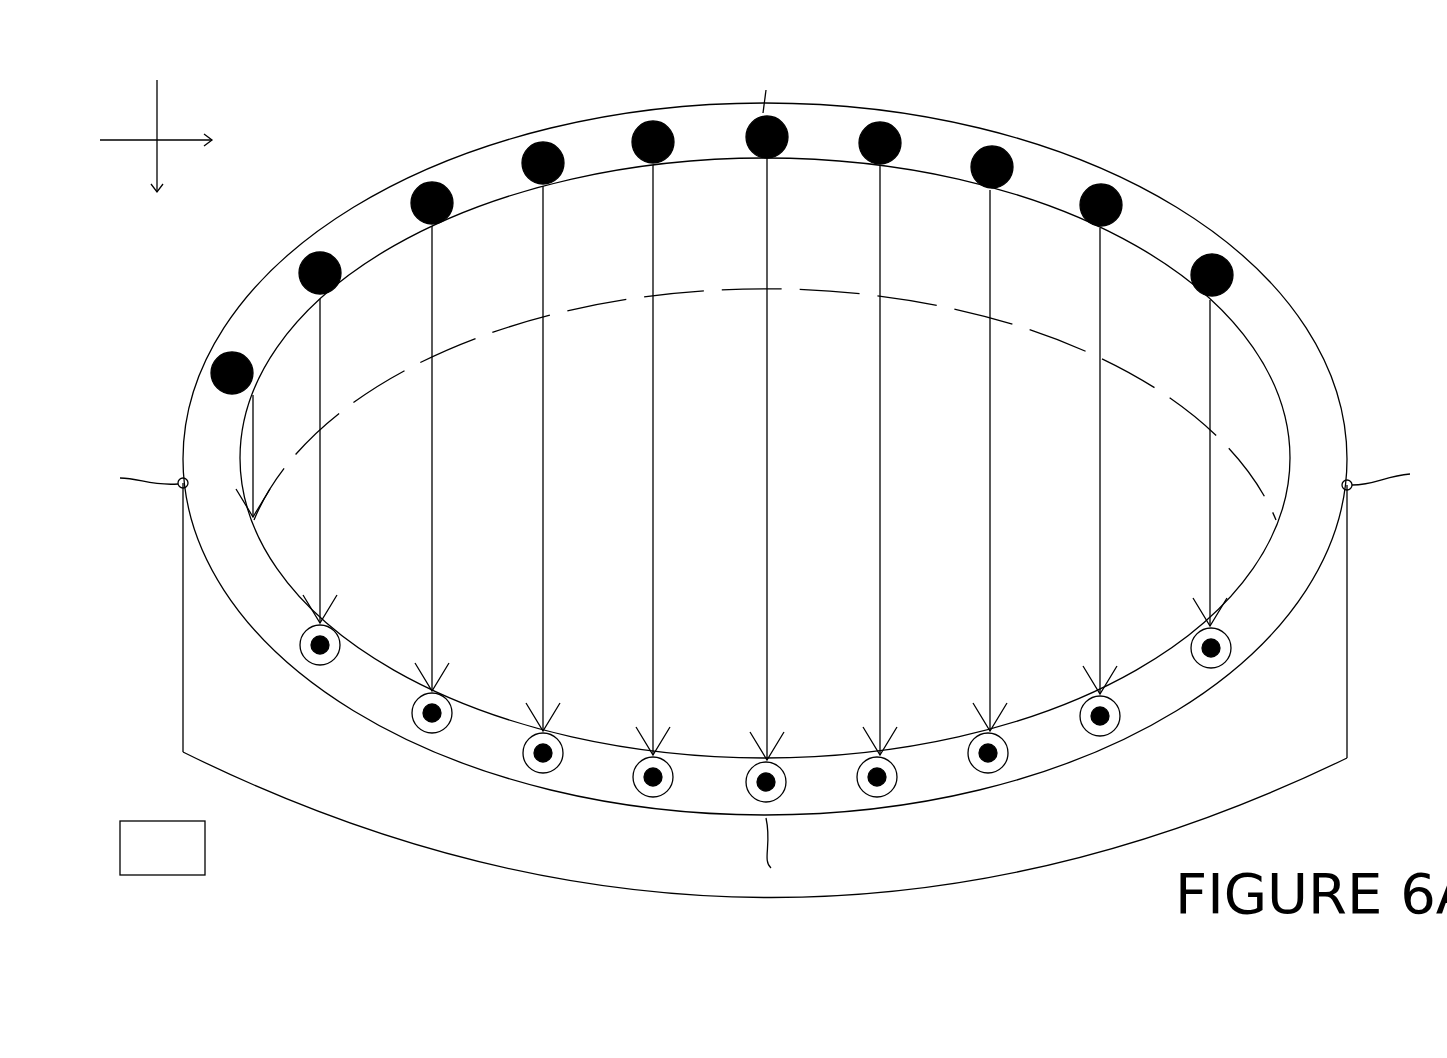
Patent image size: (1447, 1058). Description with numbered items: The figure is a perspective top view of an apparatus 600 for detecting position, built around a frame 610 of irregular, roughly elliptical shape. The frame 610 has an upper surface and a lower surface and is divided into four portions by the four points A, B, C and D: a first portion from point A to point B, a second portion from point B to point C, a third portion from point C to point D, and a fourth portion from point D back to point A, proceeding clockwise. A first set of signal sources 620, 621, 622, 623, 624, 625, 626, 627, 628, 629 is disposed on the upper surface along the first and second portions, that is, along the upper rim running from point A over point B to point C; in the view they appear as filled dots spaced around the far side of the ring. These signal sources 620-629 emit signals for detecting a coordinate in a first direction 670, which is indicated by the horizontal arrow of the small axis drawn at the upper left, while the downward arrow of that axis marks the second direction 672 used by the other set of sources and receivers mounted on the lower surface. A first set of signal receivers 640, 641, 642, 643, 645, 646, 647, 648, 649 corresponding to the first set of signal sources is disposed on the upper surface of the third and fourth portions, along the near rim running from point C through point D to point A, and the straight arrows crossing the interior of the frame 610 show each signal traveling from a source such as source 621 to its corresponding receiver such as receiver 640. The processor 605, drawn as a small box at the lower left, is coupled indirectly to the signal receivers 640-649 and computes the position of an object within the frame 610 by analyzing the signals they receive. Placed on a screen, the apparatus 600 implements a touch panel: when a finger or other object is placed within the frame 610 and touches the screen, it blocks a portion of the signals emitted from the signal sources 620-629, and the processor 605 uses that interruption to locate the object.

The apparatus for detecting position 600 is at (152, 907).
The processor 605 is at (155, 820).
The frame 610 is at (1308, 677).
The signal source 620 is at (222, 357).
The signal source 621 is at (308, 256).
The signal source 622 is at (418, 186).
The signal source 623 is at (527, 146).
The signal source 624 is at (641, 118).
The signal source 625 is at (770, 113).
The signal source 626 is at (886, 118).
The signal source 627 is at (1000, 142).
The signal source 628 is at (1110, 182).
The signal source 629 is at (1224, 251).
The signal receiver 640 is at (305, 662).
The signal receiver 641 is at (417, 731).
The signal receiver 642 is at (530, 770).
The signal receiver 643 is at (643, 795).
The signal receiver 645 is at (760, 801).
The signal receiver 646 is at (870, 796).
The signal receiver 647 is at (982, 773).
The signal receiver 648 is at (1094, 737).
The signal receiver 649 is at (1209, 670).
The first direction 670 is at (182, 140).
The second direction 672 is at (155, 152).